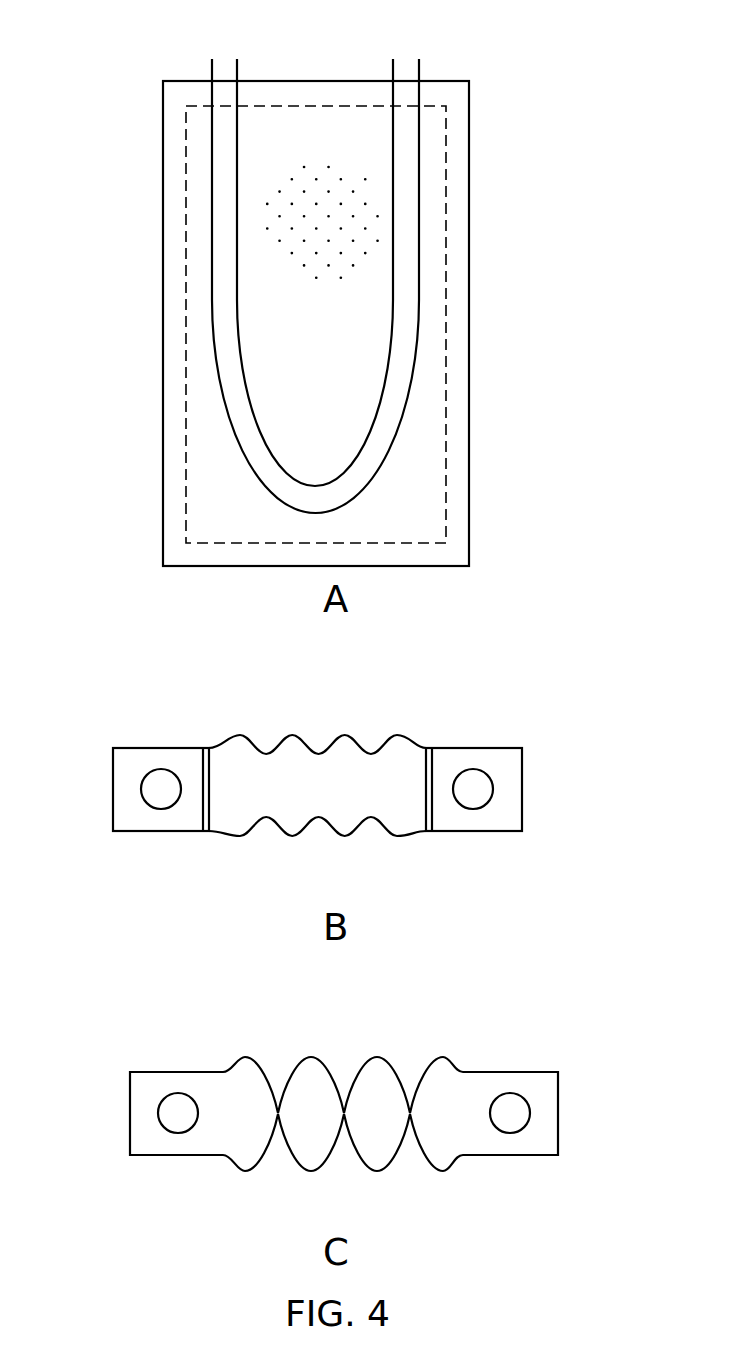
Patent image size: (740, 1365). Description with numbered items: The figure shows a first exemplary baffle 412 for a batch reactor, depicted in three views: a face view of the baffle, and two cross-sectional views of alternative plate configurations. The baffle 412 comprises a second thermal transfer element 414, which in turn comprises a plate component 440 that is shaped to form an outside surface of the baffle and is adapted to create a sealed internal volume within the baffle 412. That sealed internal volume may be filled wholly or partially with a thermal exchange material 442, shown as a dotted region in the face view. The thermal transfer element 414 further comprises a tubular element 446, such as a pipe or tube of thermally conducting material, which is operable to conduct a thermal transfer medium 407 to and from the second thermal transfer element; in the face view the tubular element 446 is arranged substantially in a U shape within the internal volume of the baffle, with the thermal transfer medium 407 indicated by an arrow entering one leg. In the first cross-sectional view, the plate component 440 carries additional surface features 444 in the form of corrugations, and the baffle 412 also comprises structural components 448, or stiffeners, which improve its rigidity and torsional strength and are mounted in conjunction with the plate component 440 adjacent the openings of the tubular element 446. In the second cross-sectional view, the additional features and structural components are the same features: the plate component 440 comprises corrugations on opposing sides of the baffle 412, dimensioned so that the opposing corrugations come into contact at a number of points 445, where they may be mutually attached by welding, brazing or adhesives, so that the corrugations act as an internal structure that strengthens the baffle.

The thermal transfer medium 407 is at (225, 93).
The baffle 412 is at (514, 254).
The second thermal transfer element 414 is at (446, 145).
The plate component 440 is at (469, 412).
The thermal exchange material 442 is at (310, 190).
The additional surface features 444 is at (343, 733).
The contact points 445 is at (343, 1110).
The tubular element 446 is at (389, 466).
The structural components 448 is at (200, 770).